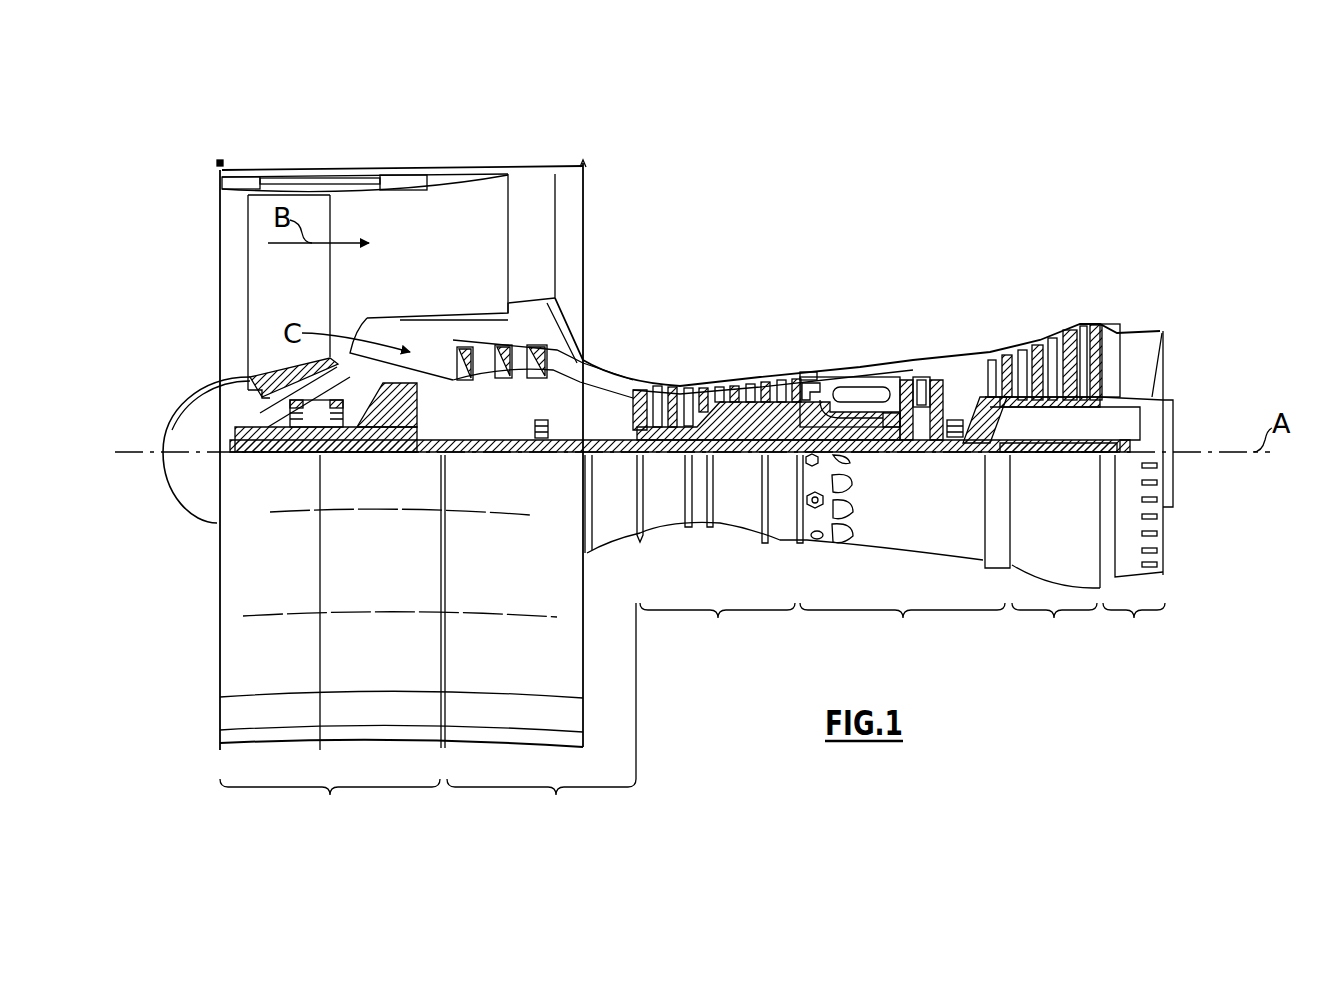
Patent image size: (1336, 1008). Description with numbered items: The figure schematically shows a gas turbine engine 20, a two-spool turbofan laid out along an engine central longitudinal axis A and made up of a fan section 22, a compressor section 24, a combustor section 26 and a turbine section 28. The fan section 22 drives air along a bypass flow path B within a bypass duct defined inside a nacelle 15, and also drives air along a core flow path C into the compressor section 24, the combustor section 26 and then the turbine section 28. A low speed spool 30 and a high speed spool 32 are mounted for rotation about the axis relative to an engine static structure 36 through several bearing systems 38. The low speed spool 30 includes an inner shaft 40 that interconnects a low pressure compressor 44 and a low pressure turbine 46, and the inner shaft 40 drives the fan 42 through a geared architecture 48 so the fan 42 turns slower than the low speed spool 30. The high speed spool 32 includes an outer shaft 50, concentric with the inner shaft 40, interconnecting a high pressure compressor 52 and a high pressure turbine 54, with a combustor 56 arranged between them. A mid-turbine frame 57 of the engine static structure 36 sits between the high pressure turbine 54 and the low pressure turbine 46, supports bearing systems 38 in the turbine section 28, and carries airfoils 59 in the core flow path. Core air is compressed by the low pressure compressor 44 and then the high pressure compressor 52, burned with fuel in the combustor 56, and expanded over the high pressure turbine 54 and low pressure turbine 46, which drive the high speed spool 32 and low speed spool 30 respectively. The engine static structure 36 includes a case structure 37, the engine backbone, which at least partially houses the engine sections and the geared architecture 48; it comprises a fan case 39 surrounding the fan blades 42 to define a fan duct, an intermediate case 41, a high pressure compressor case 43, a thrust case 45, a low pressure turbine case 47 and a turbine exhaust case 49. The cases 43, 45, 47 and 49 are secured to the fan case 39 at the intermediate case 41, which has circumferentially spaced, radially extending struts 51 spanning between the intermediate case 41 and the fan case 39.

The nacelle 15 is at (402, 170).
The gas turbine engine 20 is at (862, 219).
The fan section 22 is at (330, 162).
The compressor section 24 is at (633, 360).
The combustor section 26 is at (856, 350).
The turbine section 28 is at (1000, 313).
The low speed spool 30 is at (740, 457).
The high speed spool 32 is at (783, 373).
The engine static structure 36 is at (782, 542).
The case structure 37 is at (1203, 597).
The bearing systems 38 is at (541, 437).
The fan case 39 is at (330, 806).
The inner shaft 40 is at (603, 457).
The intermediate case 41 is at (541, 718).
The fan 42 is at (305, 299).
The high pressure compressor case 43 is at (717, 629).
The low pressure compressor 44 is at (500, 360).
The thrust case 45 is at (902, 629).
The low pressure turbine 46 is at (1043, 347).
The low pressure turbine case 47 is at (1054, 629).
The geared architecture 48 is at (410, 437).
The turbine exhaust case 49 is at (1134, 629).
The outer shaft 50 is at (860, 432).
The struts 51 is at (555, 222).
The high pressure compressor 52 is at (717, 427).
The high pressure turbine 54 is at (921, 372).
The combustor 56 is at (862, 390).
The mid-turbine frame 57 is at (963, 363).
The airfoils 59 is at (965, 390).